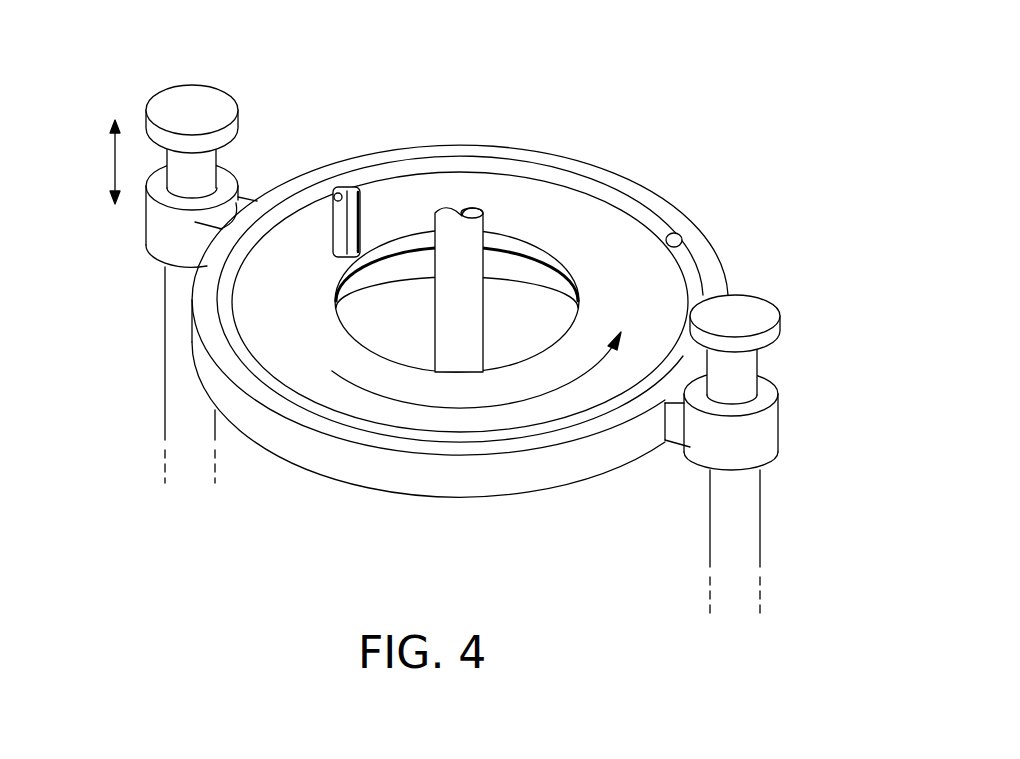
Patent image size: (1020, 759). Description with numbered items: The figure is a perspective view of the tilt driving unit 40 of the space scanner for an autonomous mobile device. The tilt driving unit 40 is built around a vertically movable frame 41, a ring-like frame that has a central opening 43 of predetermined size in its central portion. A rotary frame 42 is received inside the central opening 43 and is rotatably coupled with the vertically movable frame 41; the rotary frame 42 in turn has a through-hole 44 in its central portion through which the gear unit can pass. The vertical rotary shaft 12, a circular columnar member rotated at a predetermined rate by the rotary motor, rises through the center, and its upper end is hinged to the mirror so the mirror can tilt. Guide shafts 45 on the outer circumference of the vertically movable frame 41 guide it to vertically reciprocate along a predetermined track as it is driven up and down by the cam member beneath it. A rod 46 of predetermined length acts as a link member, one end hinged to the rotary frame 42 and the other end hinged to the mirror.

The vertical rotary shaft 12 is at (443, 320).
The tilt driving unit 40 is at (618, 166).
The vertically movable frame 41 is at (708, 260).
The rotary frame 42 is at (603, 223).
The central opening 43 is at (678, 234).
The through-hole 44 is at (512, 296).
The guide shafts 45 is at (172, 312).
The rod 46 is at (342, 220).